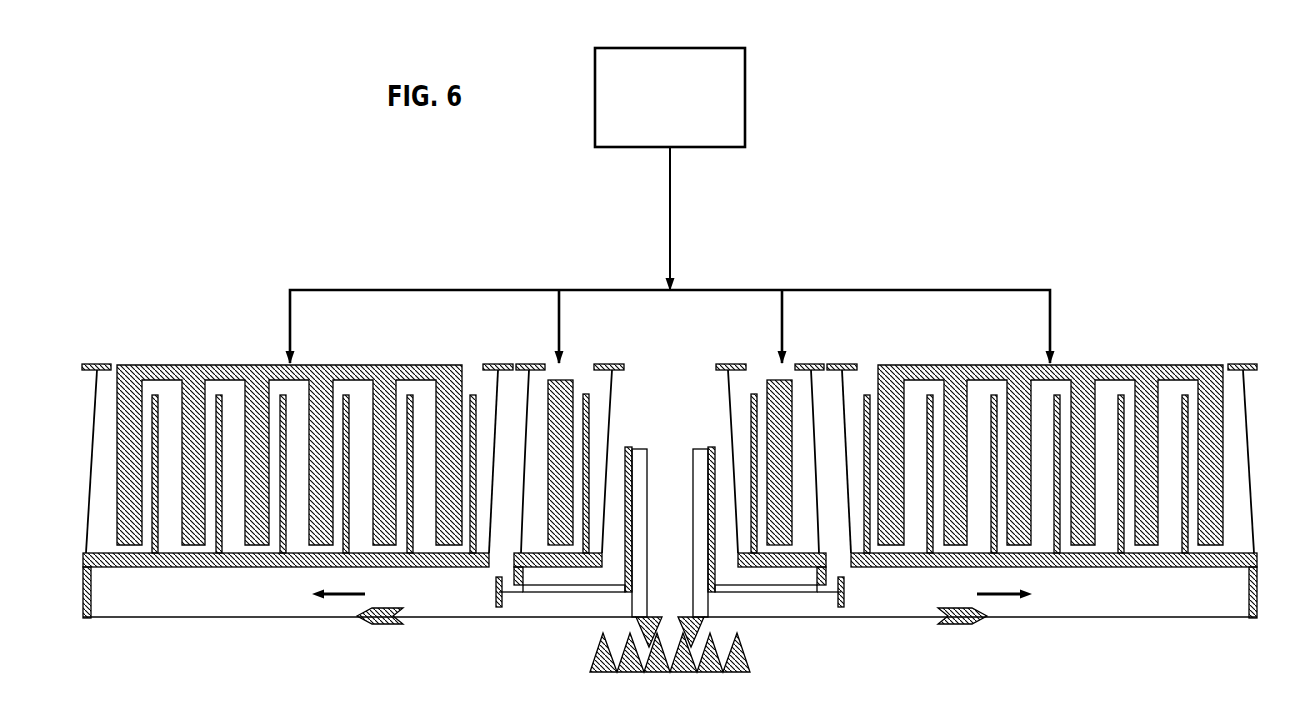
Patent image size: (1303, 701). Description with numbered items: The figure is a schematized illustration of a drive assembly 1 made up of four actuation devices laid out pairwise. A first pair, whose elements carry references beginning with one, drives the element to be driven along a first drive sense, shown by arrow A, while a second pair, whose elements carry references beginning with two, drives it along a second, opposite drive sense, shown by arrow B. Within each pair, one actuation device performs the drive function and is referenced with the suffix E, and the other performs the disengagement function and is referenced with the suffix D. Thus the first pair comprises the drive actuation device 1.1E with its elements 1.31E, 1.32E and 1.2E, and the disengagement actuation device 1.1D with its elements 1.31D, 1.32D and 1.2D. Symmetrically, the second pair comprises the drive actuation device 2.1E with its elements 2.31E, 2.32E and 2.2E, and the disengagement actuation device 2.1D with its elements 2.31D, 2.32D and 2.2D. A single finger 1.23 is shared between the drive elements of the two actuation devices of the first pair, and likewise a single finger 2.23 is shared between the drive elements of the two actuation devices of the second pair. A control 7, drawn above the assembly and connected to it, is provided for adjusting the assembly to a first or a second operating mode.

The control 7 is at (733, 95).
The drive assembly 1 is at (872, 146).
The first actuation device of the first pair 1.1E is at (279, 455).
The element of the first drive actuation device 1.31E is at (348, 377).
The element of the first drive actuation device 1.32E is at (252, 567).
The element of the first drive actuation device 1.2E is at (220, 617).
The second actuation device of the first pair 1.1D is at (518, 452).
The element of the first disengagement actuation device 1.31D is at (572, 390).
The element of the first disengagement actuation device 1.32D is at (514, 558).
The element of the first disengagement actuation device 1.2D is at (540, 602).
The finger 1.23 is at (643, 622).
The finger 2.23 is at (697, 622).
The element of the second disengagement actuation device 2.2D is at (801, 602).
The element of the second disengagement actuation device 2.32D is at (827, 558).
The element of the second disengagement actuation device 2.31D is at (770, 390).
The second actuation device of the second pair 2.1D is at (822, 450).
The element of the second drive actuation device 2.31E is at (990, 377).
The element of the second drive actuation device 2.32E is at (1092, 567).
The first actuation device of the second pair 2.1E is at (1060, 455).
The element of the second drive actuation device 2.2E is at (1122, 617).